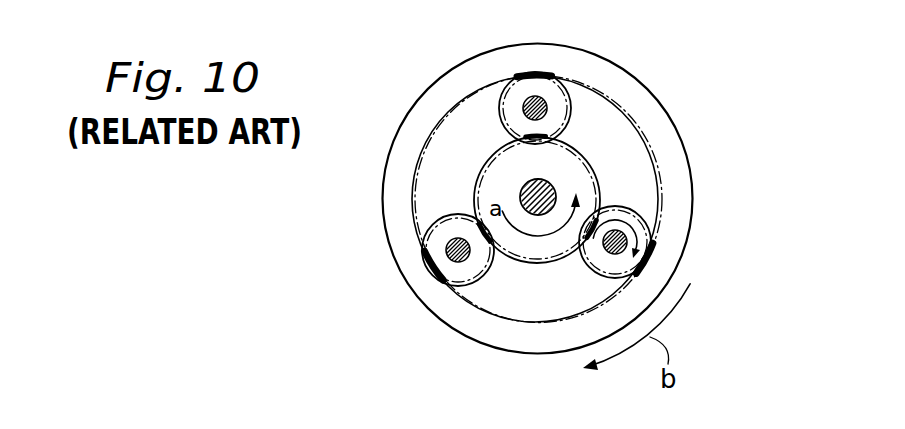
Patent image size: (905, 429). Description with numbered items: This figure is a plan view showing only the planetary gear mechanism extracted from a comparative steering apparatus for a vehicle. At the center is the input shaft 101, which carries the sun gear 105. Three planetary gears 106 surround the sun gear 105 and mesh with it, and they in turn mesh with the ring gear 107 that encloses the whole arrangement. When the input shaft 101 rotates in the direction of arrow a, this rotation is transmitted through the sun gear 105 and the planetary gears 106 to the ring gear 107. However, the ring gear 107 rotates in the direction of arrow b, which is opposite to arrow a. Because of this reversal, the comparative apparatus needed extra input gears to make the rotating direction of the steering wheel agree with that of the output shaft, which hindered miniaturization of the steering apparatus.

The input shaft 101 is at (520, 192).
The sun gear 105 is at (582, 172).
The planetary gears 106 is at (575, 82).
The ring gear 107 is at (622, 98).